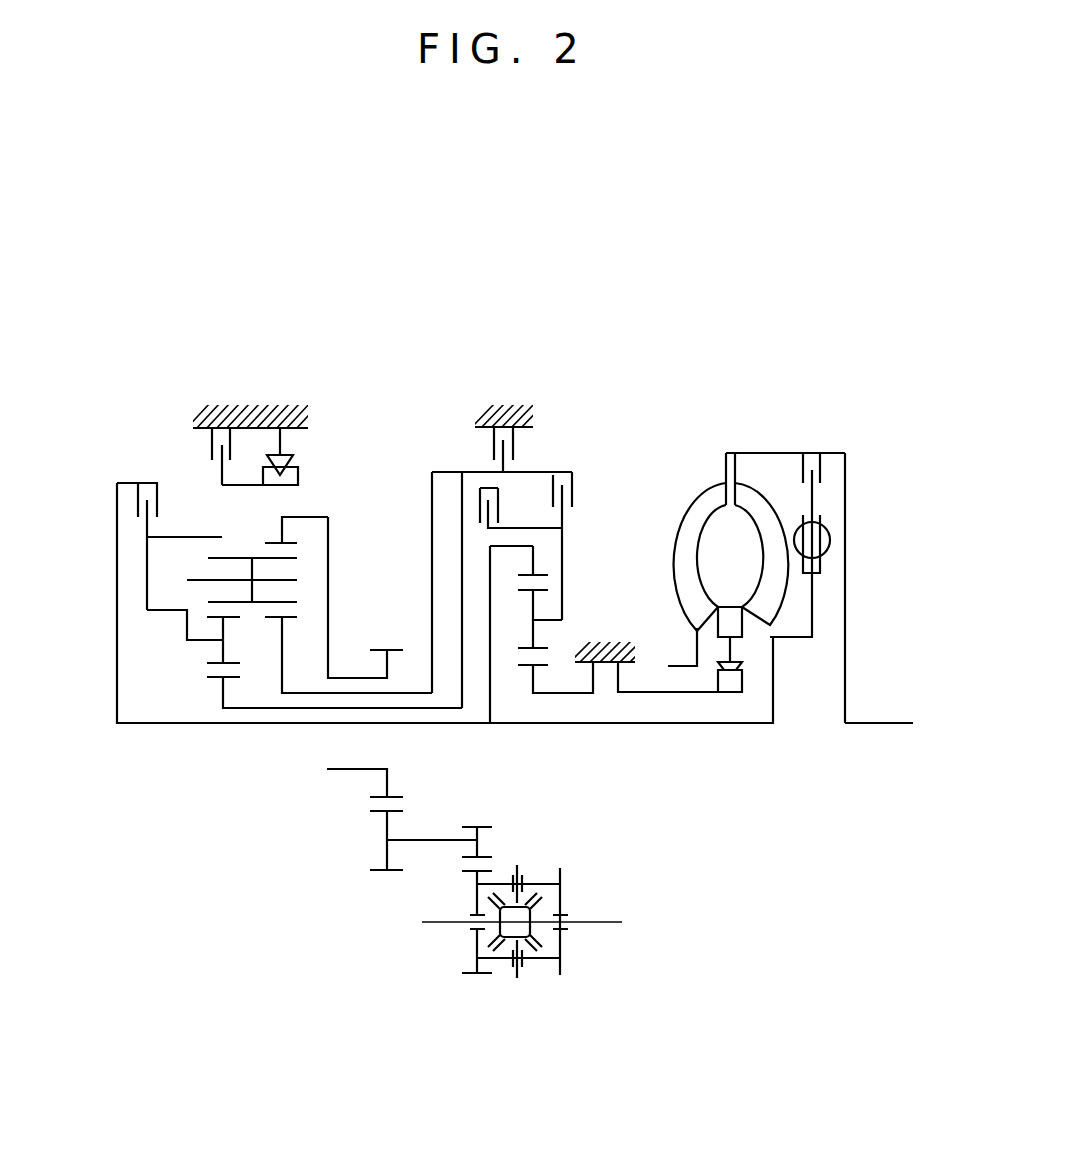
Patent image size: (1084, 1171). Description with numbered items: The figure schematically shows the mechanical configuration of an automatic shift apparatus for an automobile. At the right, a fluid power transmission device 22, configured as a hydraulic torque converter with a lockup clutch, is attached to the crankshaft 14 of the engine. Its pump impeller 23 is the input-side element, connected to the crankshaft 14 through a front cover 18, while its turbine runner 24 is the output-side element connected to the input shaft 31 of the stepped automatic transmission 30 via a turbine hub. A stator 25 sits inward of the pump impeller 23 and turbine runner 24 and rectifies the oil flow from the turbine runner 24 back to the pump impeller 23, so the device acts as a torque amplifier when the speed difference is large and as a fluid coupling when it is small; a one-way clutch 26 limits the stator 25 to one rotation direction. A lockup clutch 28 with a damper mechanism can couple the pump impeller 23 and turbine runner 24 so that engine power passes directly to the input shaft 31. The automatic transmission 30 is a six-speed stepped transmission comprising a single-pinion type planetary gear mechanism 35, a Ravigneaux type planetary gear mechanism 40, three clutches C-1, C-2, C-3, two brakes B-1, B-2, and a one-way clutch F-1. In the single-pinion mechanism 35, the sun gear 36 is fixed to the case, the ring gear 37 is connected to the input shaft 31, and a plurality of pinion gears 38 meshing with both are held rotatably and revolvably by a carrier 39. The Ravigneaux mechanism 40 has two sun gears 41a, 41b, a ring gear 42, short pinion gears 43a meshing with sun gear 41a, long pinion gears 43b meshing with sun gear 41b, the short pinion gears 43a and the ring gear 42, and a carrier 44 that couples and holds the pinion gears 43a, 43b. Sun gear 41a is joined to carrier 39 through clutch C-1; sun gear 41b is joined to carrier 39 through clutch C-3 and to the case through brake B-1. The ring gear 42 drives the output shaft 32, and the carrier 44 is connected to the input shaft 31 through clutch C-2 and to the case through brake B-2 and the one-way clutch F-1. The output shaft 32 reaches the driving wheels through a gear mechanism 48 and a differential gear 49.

The crankshaft 14 is at (885, 723).
The front cover 18 is at (846, 551).
The fluid power transmission device 22 is at (726, 430).
The pump impeller 23 is at (708, 488).
The turbine runner 24 is at (746, 480).
The stator 25 is at (741, 641).
The one-way clutch 26 is at (742, 683).
The lockup clutch 28 is at (833, 469).
The stepped automatic transmission 30 is at (647, 430).
The input shaft 31 is at (695, 723).
The output shaft 32 is at (352, 676).
The single-pinion type planetary gear mechanism 35 is at (598, 541).
The sun gear 36 is at (532, 677).
The ring gear 37 is at (536, 573).
The pinion gears 38 is at (536, 640).
The carrier 39 is at (565, 620).
The Ravigneaux type planetary gear mechanism 40 is at (172, 685).
The sun gear 41a is at (222, 696).
The sun gear 41b is at (274, 622).
The ring gear 42 is at (284, 542).
The short pinion gears 43a is at (221, 651).
The long pinion gears 43b is at (216, 557).
The carrier 44 is at (163, 612).
The gear mechanism 48 is at (421, 830).
The differential gear 49 is at (535, 855).
The brake B-1 is at (513, 453).
The brake B-2 is at (211, 455).
The clutch C-1 is at (481, 497).
The clutch C-2 is at (146, 484).
The clutch C-3 is at (573, 493).
The one-way clutch F-1 is at (290, 454).